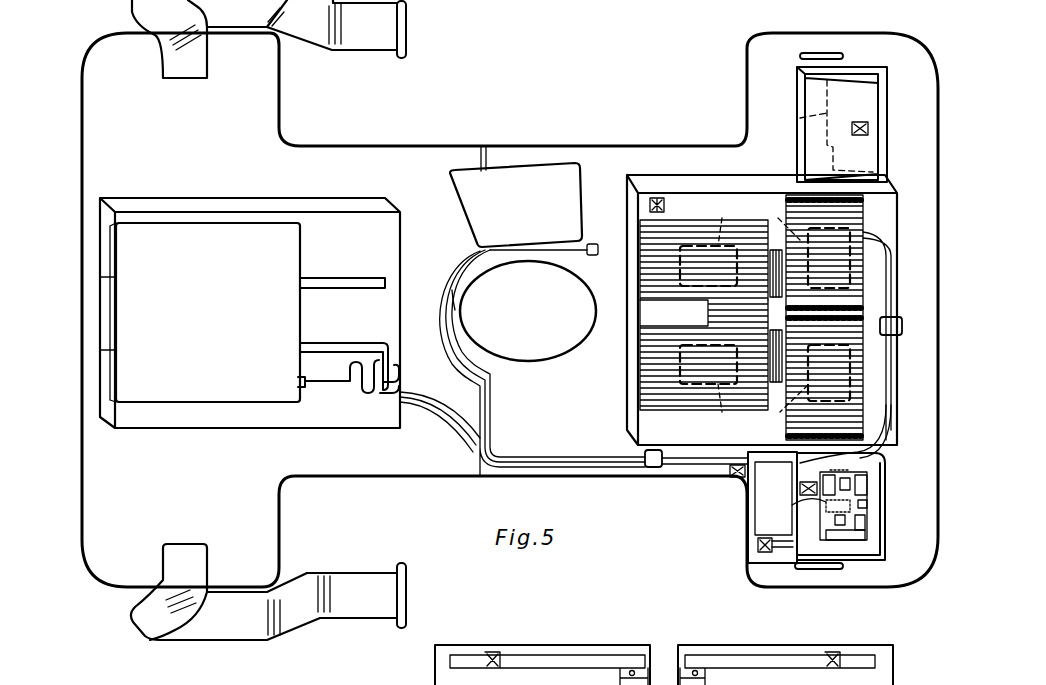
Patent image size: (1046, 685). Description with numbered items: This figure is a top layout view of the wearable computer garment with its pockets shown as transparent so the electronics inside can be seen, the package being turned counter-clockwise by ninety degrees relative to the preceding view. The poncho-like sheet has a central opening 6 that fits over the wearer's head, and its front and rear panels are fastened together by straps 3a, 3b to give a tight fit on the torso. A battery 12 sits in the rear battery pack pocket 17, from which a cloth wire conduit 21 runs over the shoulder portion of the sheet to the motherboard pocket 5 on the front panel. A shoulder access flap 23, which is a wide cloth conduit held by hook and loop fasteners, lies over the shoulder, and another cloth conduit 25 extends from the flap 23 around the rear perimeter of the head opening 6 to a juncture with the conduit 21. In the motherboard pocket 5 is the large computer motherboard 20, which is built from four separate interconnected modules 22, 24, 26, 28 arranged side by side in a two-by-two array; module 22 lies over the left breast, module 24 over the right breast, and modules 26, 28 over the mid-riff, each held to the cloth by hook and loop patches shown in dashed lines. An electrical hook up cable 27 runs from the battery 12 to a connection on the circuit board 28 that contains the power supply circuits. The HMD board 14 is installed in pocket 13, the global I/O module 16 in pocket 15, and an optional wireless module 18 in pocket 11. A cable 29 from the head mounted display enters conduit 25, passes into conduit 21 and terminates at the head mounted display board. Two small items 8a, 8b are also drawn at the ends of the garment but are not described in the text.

The strap 3a is at (378, 606).
The strap 3b is at (378, 38).
The motherboard pocket 5 is at (742, 293).
The central opening 6 is at (545, 266).
The sensor 8a is at (823, 569).
The sensor 8b is at (820, 53).
The pocket 11 is at (822, 124).
The battery 12 is at (226, 312).
The pocket 13 is at (740, 539).
The HMD board 14 is at (786, 505).
The pocket 15 is at (858, 506).
The global I/O module 16 is at (875, 502).
The battery pack pocket 17 is at (368, 260).
The wireless module 18 is at (800, 118).
The computer motherboard 20 is at (630, 222).
The wire conduit 21 is at (453, 413).
The module 22 is at (640, 380).
The shoulder access flap 23 is at (541, 167).
The module 24 is at (640, 277).
The cloth conduit 25 is at (452, 288).
The module 26 is at (870, 393).
The electrical hook up cable 27 is at (438, 392).
The circuit board 28 is at (870, 286).
The cable 29 is at (453, 302).